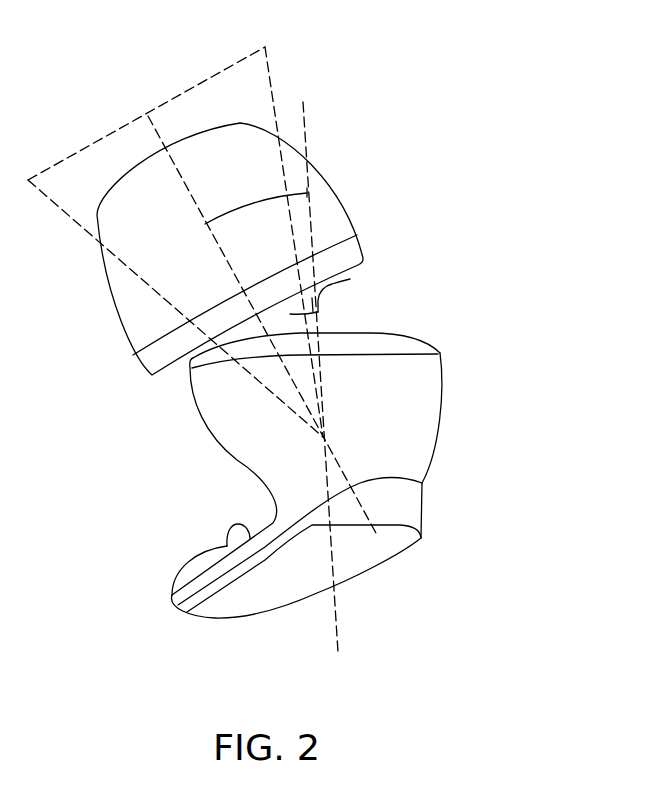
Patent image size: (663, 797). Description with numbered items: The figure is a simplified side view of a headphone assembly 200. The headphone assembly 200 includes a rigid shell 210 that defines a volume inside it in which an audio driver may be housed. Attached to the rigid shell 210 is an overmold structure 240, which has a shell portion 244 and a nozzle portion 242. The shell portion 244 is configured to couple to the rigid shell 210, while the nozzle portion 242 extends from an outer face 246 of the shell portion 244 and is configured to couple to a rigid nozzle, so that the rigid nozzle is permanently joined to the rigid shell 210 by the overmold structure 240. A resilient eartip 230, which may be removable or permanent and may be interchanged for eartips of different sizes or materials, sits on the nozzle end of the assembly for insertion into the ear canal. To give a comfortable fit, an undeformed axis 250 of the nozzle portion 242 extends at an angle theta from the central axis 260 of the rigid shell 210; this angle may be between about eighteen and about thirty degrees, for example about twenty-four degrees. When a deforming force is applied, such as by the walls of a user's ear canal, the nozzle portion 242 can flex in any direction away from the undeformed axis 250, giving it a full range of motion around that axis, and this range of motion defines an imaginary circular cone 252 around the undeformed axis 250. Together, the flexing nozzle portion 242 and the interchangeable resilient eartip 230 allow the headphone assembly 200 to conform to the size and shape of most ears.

The headphone assembly 200 is at (474, 89).
The rigid shell 210 is at (442, 407).
The resilient eartip 230 is at (110, 316).
The overmold structure 240 is at (326, 304).
The nozzle portion 242 is at (350, 279).
The shell portion 244 is at (315, 329).
The outer face 246 is at (363, 335).
The undeformed axis 250 is at (158, 137).
The imaginary circular cone 252 is at (268, 72).
The central axis 260 is at (303, 110).